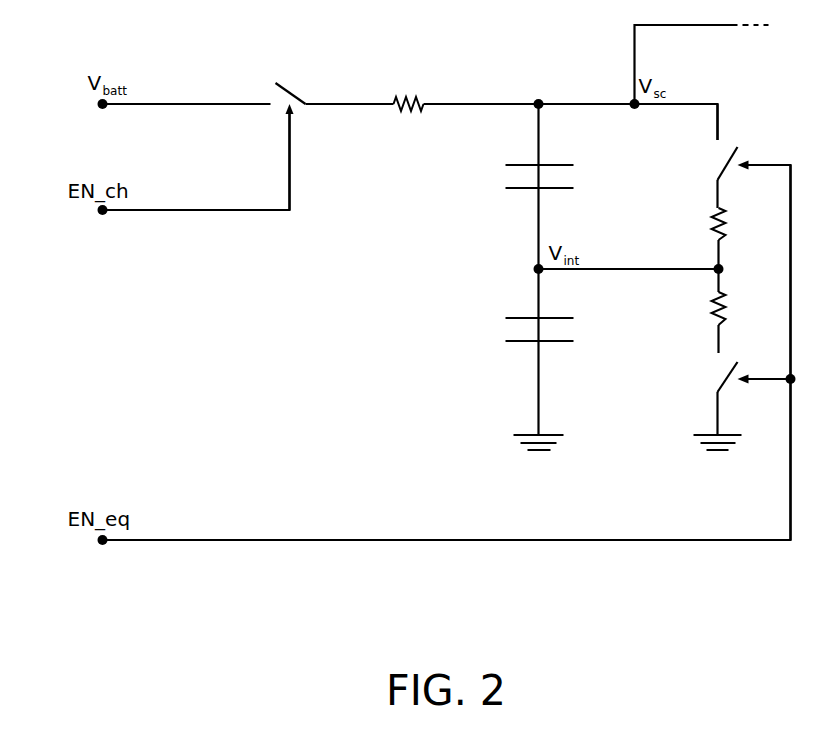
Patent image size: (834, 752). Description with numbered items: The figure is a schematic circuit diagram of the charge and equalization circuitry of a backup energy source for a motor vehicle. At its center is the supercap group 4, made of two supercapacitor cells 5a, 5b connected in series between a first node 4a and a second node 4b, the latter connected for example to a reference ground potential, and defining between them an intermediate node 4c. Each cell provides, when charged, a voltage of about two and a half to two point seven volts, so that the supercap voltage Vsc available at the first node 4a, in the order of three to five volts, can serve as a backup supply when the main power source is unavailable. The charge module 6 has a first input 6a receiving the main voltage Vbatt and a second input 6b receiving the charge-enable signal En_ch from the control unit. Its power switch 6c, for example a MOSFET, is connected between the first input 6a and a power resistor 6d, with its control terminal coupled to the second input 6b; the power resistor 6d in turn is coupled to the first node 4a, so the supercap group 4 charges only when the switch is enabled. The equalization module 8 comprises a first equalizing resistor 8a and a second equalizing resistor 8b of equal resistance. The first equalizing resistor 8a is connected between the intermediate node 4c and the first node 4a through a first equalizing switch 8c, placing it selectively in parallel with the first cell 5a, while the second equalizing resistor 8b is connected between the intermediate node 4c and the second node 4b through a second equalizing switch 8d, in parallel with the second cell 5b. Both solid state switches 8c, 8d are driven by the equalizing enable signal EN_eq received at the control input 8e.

The supercap group 4 is at (477, 256).
The first node 4a is at (536, 100).
The second node 4b is at (545, 431).
The intermediate node 4c is at (541, 272).
The first supercapacitor cell 5a is at (508, 187).
The second supercapacitor cell 5b is at (508, 340).
The charge module 6 is at (317, 224).
The first input 6a is at (100, 109).
The second input 6b is at (102, 215).
The power switch 6c is at (294, 92).
The power resistor 6d is at (405, 112).
The equalization module 8 is at (758, 116).
The first equalizing resistor 8a is at (712, 213).
The second equalizing resistor 8b is at (712, 305).
The first equalizing switch 8c is at (726, 160).
The second equalizing switch 8d is at (725, 370).
The control input 8e is at (102, 545).